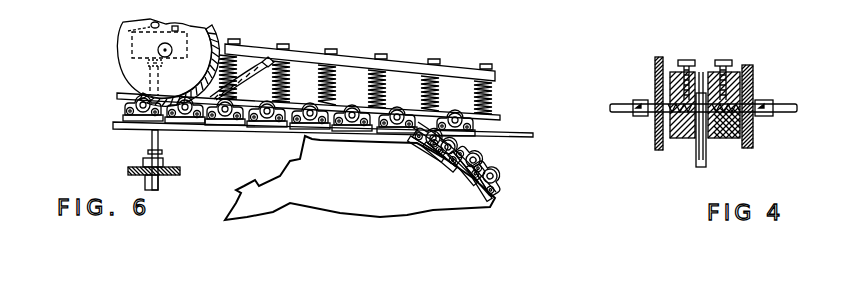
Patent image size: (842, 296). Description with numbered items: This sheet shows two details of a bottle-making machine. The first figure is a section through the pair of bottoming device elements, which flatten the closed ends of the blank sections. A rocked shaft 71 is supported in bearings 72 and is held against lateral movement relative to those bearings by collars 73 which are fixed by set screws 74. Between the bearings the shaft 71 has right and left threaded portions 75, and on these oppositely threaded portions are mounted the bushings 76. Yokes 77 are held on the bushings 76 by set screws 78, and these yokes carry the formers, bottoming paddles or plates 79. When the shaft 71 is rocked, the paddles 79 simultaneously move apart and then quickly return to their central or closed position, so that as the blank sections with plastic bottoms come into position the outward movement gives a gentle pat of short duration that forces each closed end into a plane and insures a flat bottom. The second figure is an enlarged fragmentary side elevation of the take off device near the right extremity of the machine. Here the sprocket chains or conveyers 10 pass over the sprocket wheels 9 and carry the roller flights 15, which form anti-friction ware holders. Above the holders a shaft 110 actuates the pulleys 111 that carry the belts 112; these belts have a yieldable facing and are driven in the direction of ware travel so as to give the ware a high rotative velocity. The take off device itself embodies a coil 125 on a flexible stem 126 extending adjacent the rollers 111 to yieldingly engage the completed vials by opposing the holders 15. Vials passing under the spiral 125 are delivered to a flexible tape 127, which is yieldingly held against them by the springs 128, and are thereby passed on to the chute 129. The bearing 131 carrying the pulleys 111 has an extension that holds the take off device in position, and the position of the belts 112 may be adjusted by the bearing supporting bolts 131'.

In FIG. 6, the sprocket wheels 9 is at (240, 185).
In FIG. 6, the sprocket chains 10 is at (172, 133).
In FIG. 6, the roller flights 15 is at (287, 134).
In FIG. 6, the shaft 110 is at (158, 52).
In FIG. 6, the pulleys 111 is at (121, 37).
In FIG. 6, the belts 112 is at (214, 38).
In FIG. 6, the coil 125 is at (256, 62).
In FIG. 6, the flexible stem 126 is at (118, 97).
In FIG. 6, the flexible tape 127 is at (340, 110).
In FIG. 6, the springs 128 is at (490, 96).
In FIG. 6, the chute 129 is at (503, 137).
In FIG. 6, the bearing 131 is at (128, 48).
In FIG. 6, the bearing supporting bolts 131' is at (182, 153).
In FIG. 4, the shaft 71 is at (792, 110).
In FIG. 4, the bearings 72 is at (655, 87).
In FIG. 4, the collars 73 is at (656, 120).
In FIG. 4, the set screws 74 is at (641, 112).
In FIG. 4, the right and left threaded portions 75 is at (718, 138).
In FIG. 4, the bushings 76 is at (673, 128).
In FIG. 4, the yokes 77 is at (710, 80).
In FIG. 4, the set screws 78 is at (735, 72).
In FIG. 4, the bottoming paddles 79 is at (700, 160).